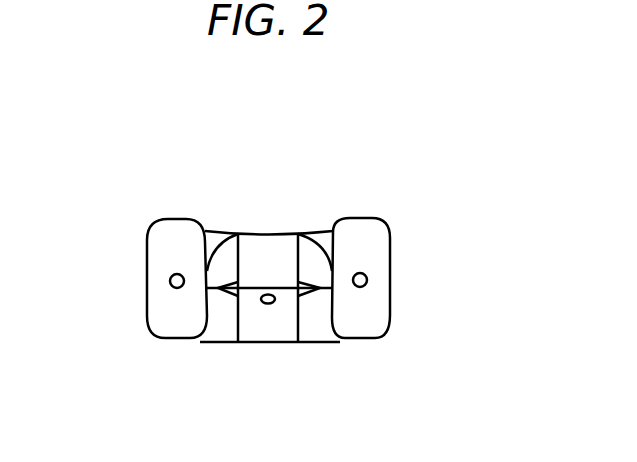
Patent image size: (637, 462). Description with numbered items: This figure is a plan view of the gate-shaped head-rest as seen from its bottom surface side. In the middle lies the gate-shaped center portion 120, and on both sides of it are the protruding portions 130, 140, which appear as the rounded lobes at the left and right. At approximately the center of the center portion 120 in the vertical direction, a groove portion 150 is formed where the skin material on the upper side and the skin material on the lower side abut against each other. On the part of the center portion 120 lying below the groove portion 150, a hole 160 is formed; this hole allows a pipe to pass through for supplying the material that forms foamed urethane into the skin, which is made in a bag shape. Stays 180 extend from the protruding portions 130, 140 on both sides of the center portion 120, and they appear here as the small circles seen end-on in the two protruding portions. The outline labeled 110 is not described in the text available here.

The main body 110 is at (280, 232).
The center portion 120 is at (260, 330).
The protruding portion 130 is at (165, 257).
The protruding portion 140 is at (373, 251).
The groove portion 150 is at (268, 287).
The hole 160 is at (270, 304).
The stays 180 is at (170, 281).